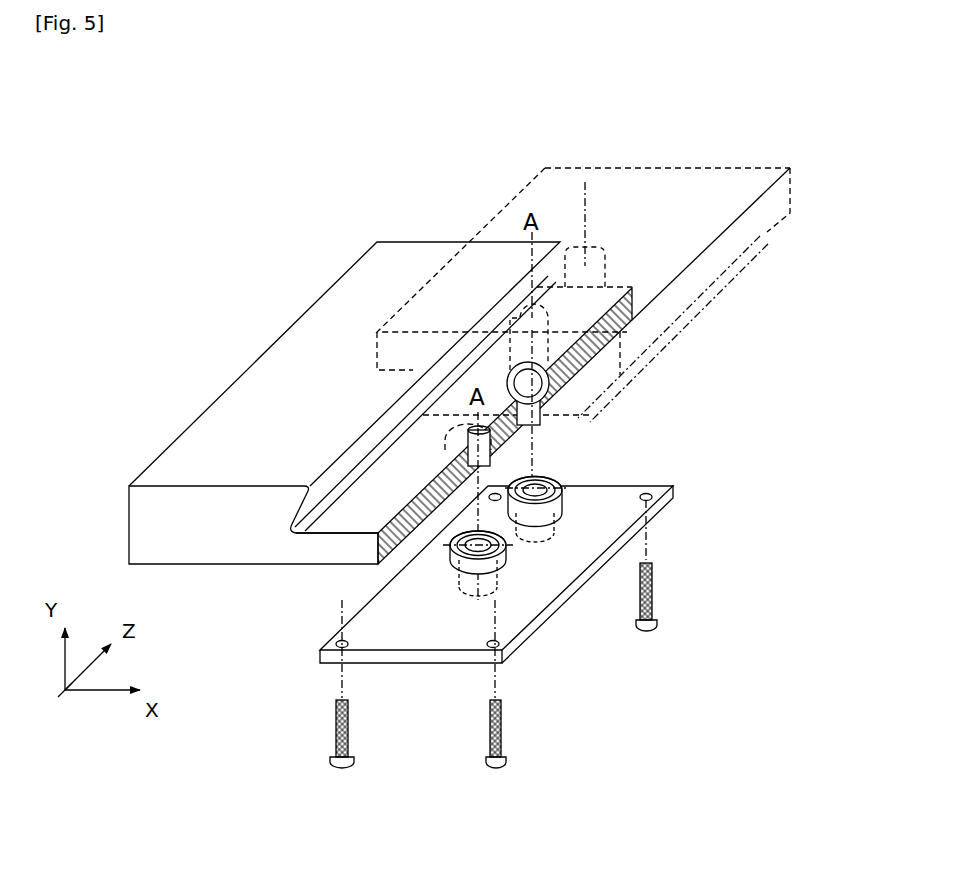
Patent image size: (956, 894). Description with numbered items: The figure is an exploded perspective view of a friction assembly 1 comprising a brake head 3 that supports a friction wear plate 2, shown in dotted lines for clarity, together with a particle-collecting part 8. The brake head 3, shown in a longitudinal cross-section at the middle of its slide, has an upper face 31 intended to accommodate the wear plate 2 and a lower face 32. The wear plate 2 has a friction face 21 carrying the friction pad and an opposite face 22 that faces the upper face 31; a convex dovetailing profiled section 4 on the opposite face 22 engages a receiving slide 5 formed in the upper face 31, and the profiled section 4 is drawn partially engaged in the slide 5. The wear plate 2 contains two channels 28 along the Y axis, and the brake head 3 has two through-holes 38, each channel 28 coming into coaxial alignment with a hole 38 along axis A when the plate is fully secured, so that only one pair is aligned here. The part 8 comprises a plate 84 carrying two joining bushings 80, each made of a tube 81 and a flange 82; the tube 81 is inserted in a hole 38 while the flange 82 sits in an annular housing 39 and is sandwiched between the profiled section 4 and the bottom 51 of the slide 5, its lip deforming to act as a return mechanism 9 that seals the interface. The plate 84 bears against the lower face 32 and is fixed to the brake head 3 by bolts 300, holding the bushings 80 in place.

The friction assembly 1 is at (185, 180).
The friction wear plate 2 is at (542, 183).
The friction face 21 is at (700, 188).
The opposite face 22 is at (762, 230).
The channel 28 is at (523, 297).
The brake head 3 is at (252, 383).
The upper face 31 is at (427, 262).
The lower face 32 is at (298, 566).
The through-hole 38 is at (462, 434).
The annular housing 39 is at (383, 455).
The profiled section 4 is at (597, 383).
The receiving slide 5 is at (330, 510).
The bottom of the slide 51 is at (383, 463).
The part 8 is at (550, 645).
The joining bushing 80 is at (468, 578).
The tube 81 is at (540, 523).
The flange 82 is at (577, 496).
The return mechanism 9 is at (547, 480).
The plate 84 is at (605, 528).
The bolt 300 is at (335, 727).